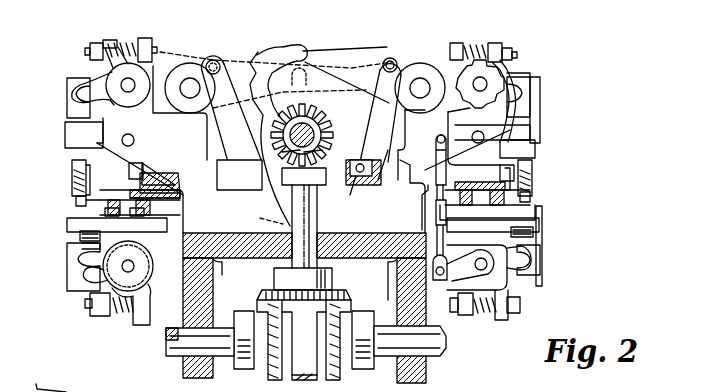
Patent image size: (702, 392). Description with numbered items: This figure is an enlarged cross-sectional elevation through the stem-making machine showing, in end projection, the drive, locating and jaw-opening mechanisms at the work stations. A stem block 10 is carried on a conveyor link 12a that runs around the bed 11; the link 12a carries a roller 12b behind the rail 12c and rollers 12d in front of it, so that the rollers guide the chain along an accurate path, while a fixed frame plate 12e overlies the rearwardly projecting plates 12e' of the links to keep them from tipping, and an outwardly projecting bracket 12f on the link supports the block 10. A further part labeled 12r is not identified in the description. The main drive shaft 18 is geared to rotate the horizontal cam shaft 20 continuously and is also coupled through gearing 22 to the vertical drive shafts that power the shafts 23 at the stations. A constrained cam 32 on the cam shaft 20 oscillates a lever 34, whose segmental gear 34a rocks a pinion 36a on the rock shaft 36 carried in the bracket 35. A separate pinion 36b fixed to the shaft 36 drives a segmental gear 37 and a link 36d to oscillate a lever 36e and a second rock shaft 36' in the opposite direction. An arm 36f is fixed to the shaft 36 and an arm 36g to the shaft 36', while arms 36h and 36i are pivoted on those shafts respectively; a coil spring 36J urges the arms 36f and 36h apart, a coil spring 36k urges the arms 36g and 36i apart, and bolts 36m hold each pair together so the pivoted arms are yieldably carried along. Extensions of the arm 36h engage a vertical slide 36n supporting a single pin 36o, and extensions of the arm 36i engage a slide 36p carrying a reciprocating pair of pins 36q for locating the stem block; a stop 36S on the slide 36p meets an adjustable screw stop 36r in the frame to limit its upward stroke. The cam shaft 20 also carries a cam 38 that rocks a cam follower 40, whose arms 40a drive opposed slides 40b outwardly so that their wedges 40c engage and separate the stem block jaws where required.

The stem block 10 is at (36, 179).
The bed 11 is at (304, 308).
The link 12a is at (148, 186).
The roller 12b is at (144, 216).
The rail 12c is at (140, 216).
The rollers 12d is at (110, 225).
The fixed frame plate 12e is at (171, 176).
The rearwardly projecting plates 12e' is at (175, 190).
The outwardly projecting bracket 12f is at (545, 174).
The spring post 12r is at (70, 178).
The main drive shaft 18 is at (291, 208).
The cam shaft 20 is at (322, 128).
The gearing 22 is at (327, 152).
The shafts 23 is at (172, 357).
The cams 32 is at (396, 143).
The lever 34 is at (190, 58).
The segmental gear 34a is at (178, 60).
The bracket 35 is at (317, 196).
The rock shaft 36 is at (304, 94).
The rock shaft 36' is at (277, 271).
The pinion 36a is at (452, 134).
The separate pinion 36b is at (522, 78).
The link 36d is at (428, 213).
The lever 36e is at (468, 258).
The arm 36f is at (150, 40).
The arm 36g is at (142, 328).
The arm 36h is at (104, 42).
The arm 36i is at (102, 318).
The coil spring 36J is at (125, 42).
The coil spring 36k is at (122, 316).
The bolt 36m is at (84, 51).
The vertical slide 36n is at (67, 100).
The pin 36o is at (78, 149).
The slide 36p is at (70, 274).
The pair of pins 36q is at (80, 196).
The adjustable screw stop 36r is at (80, 238).
The stop 36S is at (86, 250).
The segmental gear 37 is at (492, 126).
The cam 38 is at (258, 52).
The cam follower 40 is at (220, 46).
The arm 40a is at (301, 125).
The slide 40b is at (299, 176).
The wedge 40c is at (126, 172).